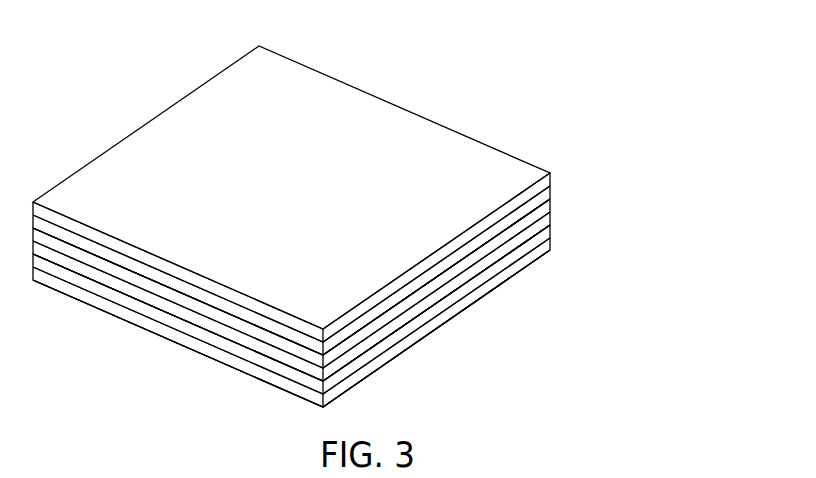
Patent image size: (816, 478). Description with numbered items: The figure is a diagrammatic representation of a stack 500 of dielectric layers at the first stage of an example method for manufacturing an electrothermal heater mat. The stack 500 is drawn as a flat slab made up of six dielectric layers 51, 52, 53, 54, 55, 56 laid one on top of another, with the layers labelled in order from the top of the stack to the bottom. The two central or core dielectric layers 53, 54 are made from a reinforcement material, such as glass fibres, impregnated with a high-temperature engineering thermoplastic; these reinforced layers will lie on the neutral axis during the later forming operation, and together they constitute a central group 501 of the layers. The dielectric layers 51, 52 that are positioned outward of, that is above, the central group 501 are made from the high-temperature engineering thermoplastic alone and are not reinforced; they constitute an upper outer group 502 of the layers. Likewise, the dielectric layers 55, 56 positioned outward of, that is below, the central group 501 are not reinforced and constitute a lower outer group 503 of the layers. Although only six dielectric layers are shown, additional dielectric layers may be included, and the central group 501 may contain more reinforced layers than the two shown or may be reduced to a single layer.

The stack 500 is at (525, 90).
The central group 501 is at (652, 187).
The upper group 502 is at (652, 122).
The lower group 503 is at (652, 250).
The dielectric layer 51 is at (551, 181).
The dielectric layer 52 is at (551, 193).
The dielectric layer 53 is at (551, 206).
The dielectric layer 54 is at (551, 218).
The dielectric layer 55 is at (551, 231).
The dielectric layer 56 is at (551, 244).